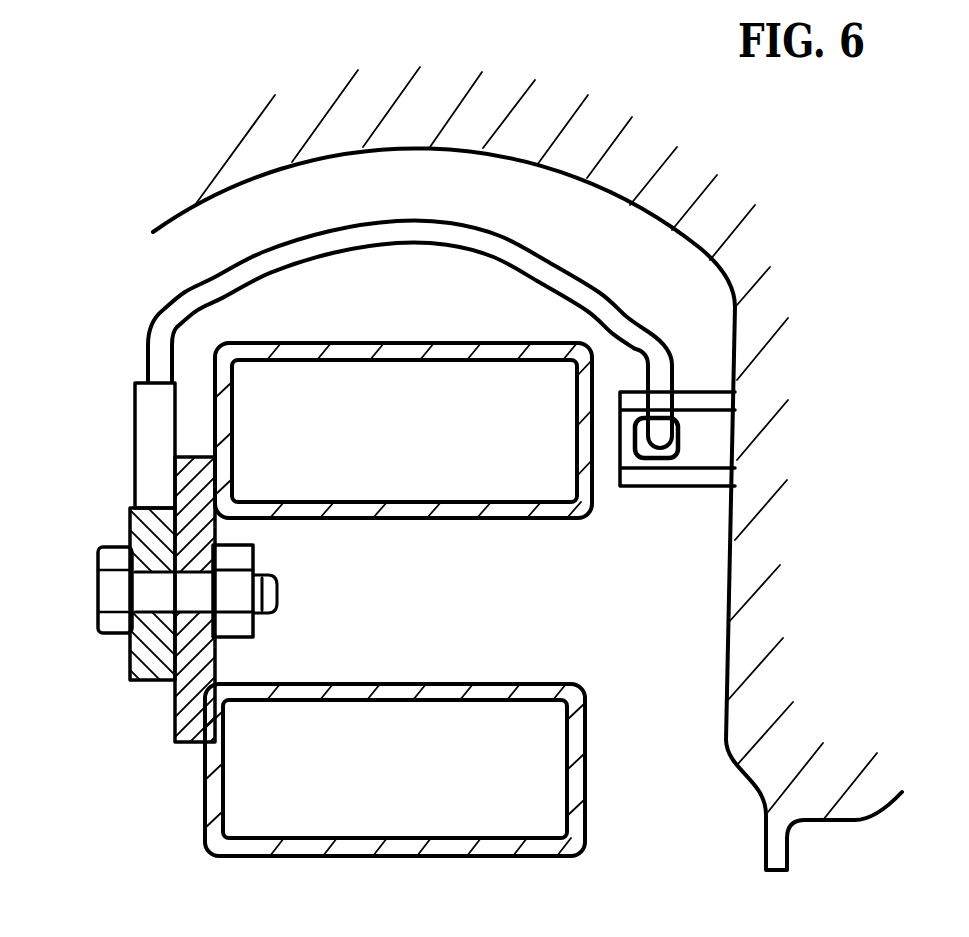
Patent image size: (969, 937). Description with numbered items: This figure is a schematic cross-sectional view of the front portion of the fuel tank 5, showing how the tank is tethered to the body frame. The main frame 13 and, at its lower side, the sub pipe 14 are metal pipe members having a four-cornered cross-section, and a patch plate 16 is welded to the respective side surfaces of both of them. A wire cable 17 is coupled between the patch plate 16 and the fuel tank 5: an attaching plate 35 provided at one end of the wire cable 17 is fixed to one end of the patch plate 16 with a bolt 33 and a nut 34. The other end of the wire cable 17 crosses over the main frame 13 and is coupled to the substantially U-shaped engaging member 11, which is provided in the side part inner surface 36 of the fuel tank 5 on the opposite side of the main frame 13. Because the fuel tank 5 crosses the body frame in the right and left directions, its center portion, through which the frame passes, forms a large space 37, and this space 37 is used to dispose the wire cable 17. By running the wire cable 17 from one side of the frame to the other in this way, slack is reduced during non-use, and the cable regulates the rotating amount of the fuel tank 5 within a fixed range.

The fuel tank 5 is at (143, 146).
The engaging member 11 is at (648, 486).
The main frame 13 is at (403, 343).
The sub pipe 14 is at (398, 686).
The patch plate 16 is at (175, 730).
The wire cable 17 is at (400, 220).
The bolt 33 is at (112, 600).
The nut 34 is at (242, 557).
The attaching plate 35 is at (145, 428).
The side part inner surface 36 is at (727, 657).
The space 37 is at (507, 613).